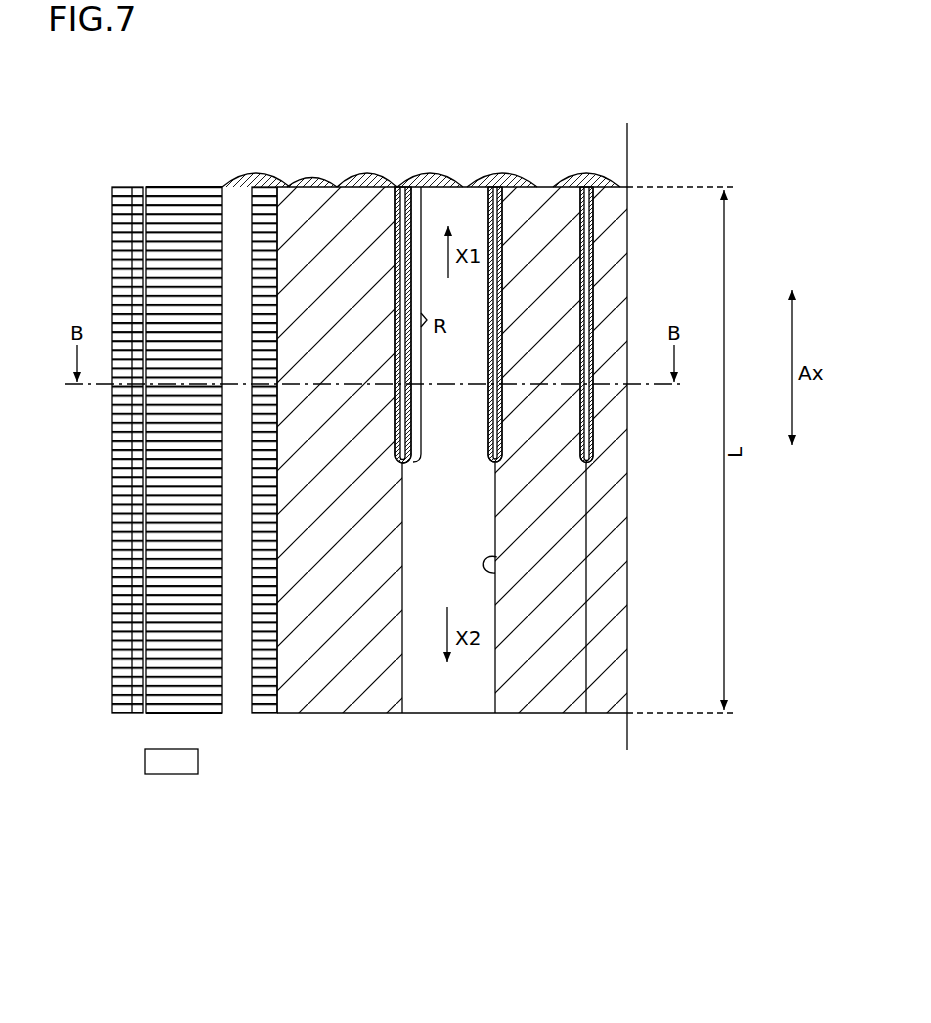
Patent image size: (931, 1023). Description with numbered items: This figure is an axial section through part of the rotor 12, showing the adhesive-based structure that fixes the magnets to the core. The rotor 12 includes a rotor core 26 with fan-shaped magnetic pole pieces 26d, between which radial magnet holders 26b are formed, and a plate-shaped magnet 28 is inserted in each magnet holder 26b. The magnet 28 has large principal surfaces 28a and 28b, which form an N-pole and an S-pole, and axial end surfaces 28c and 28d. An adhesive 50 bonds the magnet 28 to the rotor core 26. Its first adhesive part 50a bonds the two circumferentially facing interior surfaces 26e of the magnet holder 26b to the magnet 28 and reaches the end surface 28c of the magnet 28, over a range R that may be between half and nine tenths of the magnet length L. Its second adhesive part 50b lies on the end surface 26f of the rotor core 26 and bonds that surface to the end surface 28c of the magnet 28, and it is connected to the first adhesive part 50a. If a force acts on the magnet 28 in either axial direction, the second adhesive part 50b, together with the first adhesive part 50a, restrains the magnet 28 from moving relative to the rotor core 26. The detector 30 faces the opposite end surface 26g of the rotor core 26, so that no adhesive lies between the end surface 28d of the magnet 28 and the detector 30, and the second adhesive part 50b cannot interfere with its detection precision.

The rotor 12 is at (418, 872).
The rotor core 26 is at (147, 153).
The magnet holder 26b is at (446, 408).
The magnetic pole piece 26d is at (298, 696).
The interior surface of the magnet holder 26e is at (403, 585).
The end surface of the rotor core 26f is at (190, 185).
The end surface of the rotor core 26g is at (203, 715).
The magnet 28 is at (448, 696).
The principal surface of the magnet 28a is at (502, 597).
The principal surface of the magnet 28b is at (402, 517).
The end surface of the magnet 28c is at (481, 184).
The end surface of the magnet 28d is at (479, 715).
The detector 30 is at (128, 762).
The adhesive 50 is at (461, 435).
The first adhesive part 50a is at (396, 462).
The second adhesive part 50b is at (368, 175).